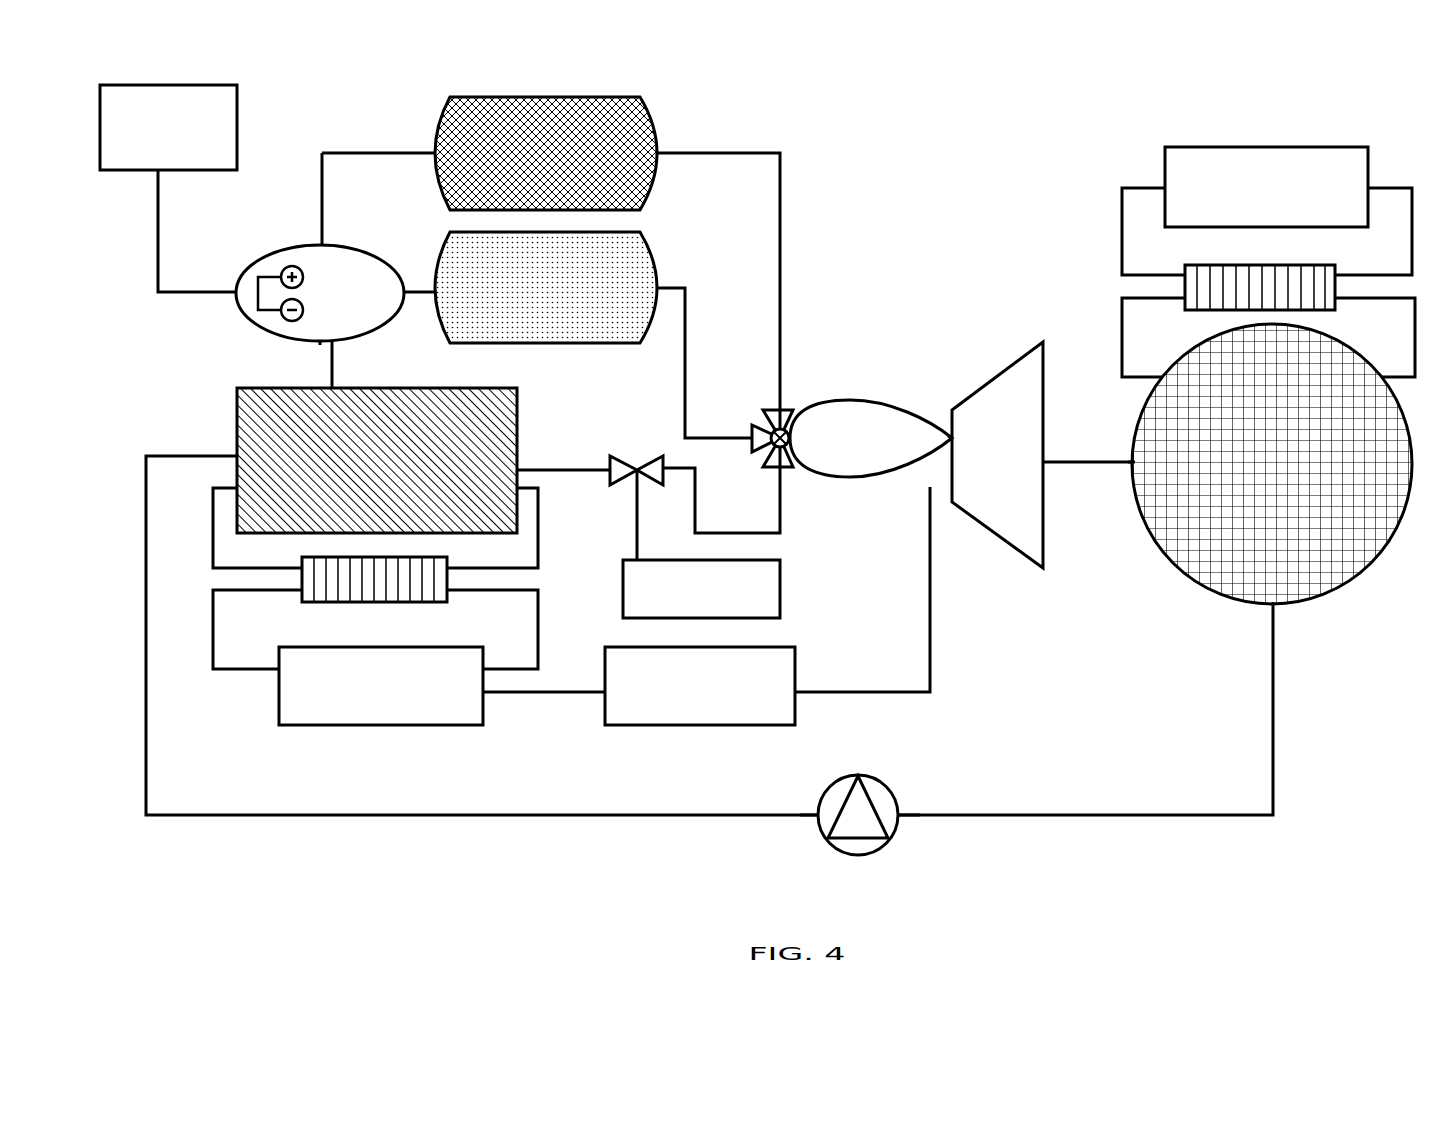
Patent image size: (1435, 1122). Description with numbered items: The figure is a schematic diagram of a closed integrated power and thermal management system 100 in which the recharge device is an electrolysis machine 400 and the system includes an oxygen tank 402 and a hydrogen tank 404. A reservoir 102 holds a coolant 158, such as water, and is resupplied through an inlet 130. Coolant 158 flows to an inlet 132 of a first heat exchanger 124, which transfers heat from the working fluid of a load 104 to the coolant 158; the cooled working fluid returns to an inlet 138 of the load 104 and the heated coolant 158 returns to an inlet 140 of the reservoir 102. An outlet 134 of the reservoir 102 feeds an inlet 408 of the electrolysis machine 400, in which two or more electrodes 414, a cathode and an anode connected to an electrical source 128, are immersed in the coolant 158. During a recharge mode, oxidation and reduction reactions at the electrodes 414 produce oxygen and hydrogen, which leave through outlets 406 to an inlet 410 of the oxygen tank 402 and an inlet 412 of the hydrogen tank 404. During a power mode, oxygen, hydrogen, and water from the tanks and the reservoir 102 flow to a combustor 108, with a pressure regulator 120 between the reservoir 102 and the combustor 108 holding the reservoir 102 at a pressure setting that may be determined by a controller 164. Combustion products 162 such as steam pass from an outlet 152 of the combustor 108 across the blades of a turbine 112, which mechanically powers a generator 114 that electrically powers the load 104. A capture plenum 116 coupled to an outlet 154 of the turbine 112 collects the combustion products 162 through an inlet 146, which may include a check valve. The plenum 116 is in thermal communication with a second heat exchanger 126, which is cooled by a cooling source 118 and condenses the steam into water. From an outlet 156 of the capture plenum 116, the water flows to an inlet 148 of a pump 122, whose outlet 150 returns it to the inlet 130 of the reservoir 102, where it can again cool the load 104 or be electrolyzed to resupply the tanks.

The closed integrated power and thermal management system 100 is at (1318, 833).
The reservoir 102 is at (240, 385).
The load 104 is at (300, 727).
The combustor 108 is at (835, 478).
The turbine 112 is at (1000, 543).
The generator 114 is at (655, 727).
The capture plenum 116 is at (1350, 582).
The cooling source 118 is at (1255, 147).
The pressure regulator 120 is at (634, 462).
The pump 122 is at (858, 776).
The first heat exchanger 124 is at (300, 576).
The second heat exchanger 126 is at (1185, 283).
The electrical source 128 is at (237, 95).
The inlet of the reservoir 130 is at (237, 455).
The inlet of the first heat exchanger 132 is at (300, 566).
The outlet of the reservoir 134 is at (340, 380).
The inlet of the load 138 is at (278, 672).
The inlet of the reservoir 140 is at (520, 492).
The inlet of the capture plenum 146 is at (1133, 470).
The inlet of the pump 148 is at (899, 822).
The outlet of the pump 150 is at (820, 818).
The outlet of the combustor 152 is at (950, 412).
The outlet of the turbine 154 is at (1045, 462).
The outlet of the capture plenum 156 is at (1263, 614).
The coolant 158 is at (430, 480).
The combustion products 162 is at (1353, 472).
The controller 164 is at (781, 585).
The electrolysis machine 400 is at (283, 245).
The oxygen tank 402 is at (500, 97).
The hydrogen tank 404 is at (492, 343).
The outlets of the electrolysis machine 406 is at (388, 246).
The inlet of the electrolysis machine 408 is at (322, 345).
The inlet of the oxygen tank 410 is at (433, 152).
The inlet of the hydrogen tank 412 is at (432, 300).
The electrodes 414 is at (275, 278).